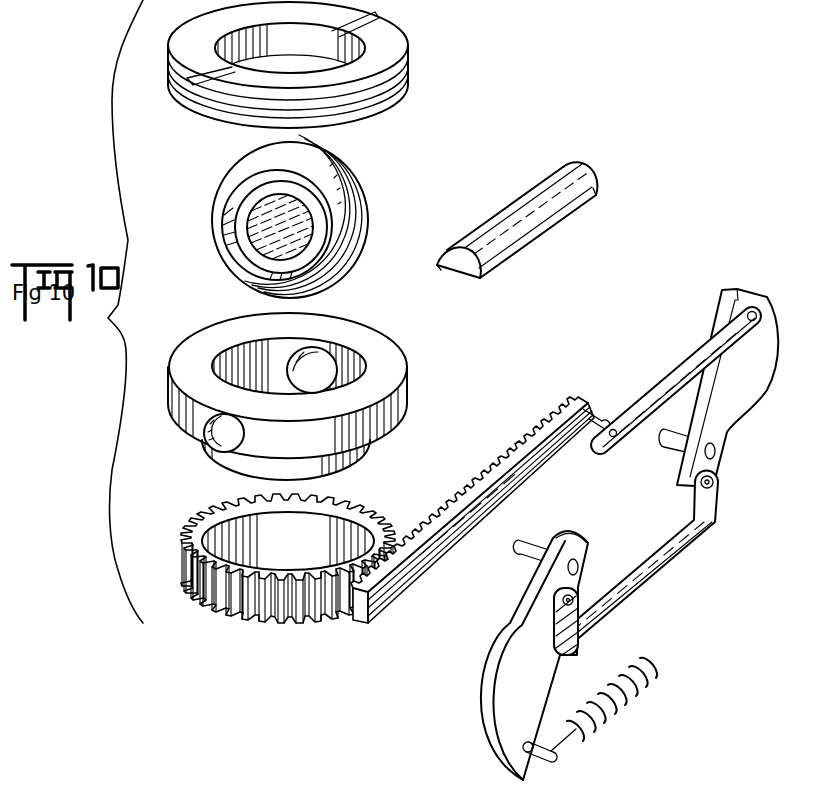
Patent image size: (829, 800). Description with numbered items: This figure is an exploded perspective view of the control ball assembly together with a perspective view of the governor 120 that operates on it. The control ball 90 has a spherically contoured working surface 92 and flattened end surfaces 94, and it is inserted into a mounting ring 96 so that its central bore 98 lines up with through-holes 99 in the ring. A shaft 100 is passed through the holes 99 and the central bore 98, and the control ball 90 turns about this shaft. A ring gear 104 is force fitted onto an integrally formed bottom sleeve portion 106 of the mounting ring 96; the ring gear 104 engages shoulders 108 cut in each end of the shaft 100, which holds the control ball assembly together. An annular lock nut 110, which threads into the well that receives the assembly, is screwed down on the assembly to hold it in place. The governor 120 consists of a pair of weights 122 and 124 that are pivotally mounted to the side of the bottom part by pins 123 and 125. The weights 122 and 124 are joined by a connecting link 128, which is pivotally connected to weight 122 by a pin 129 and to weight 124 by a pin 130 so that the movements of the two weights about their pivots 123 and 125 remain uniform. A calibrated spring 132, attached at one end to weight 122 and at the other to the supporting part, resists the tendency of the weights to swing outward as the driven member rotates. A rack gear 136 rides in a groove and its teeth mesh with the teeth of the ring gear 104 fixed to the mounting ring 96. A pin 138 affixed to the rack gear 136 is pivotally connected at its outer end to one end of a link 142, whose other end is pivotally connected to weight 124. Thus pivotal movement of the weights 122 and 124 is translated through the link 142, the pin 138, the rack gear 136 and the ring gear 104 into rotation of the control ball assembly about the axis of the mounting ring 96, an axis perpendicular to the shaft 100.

The control ball 90 is at (287, 215).
The spherically contoured working surface 92 is at (355, 205).
The flattened end surfaces 94 is at (222, 255).
The mounting ring 96 is at (287, 396).
The central bore 98 is at (264, 214).
The through-holes 99 is at (308, 355).
The shaft 100 is at (522, 219).
The ring gear 104 is at (200, 518).
The bottom sleeve portion 106 is at (372, 452).
The shoulders 108 is at (593, 190).
The annular lock nut 110 is at (388, 53).
The governor 120 is at (576, 534).
The weight 122 is at (482, 700).
The pin 123 is at (535, 548).
The weight 124 is at (755, 378).
The pin 125 is at (671, 441).
The connecting link 128 is at (665, 565).
The pin 129 is at (574, 598).
The pin 130 is at (714, 482).
The calibrated spring 132 is at (640, 698).
The rack gear 136 is at (480, 494).
The pin 138 is at (603, 415).
The link 142 is at (690, 355).